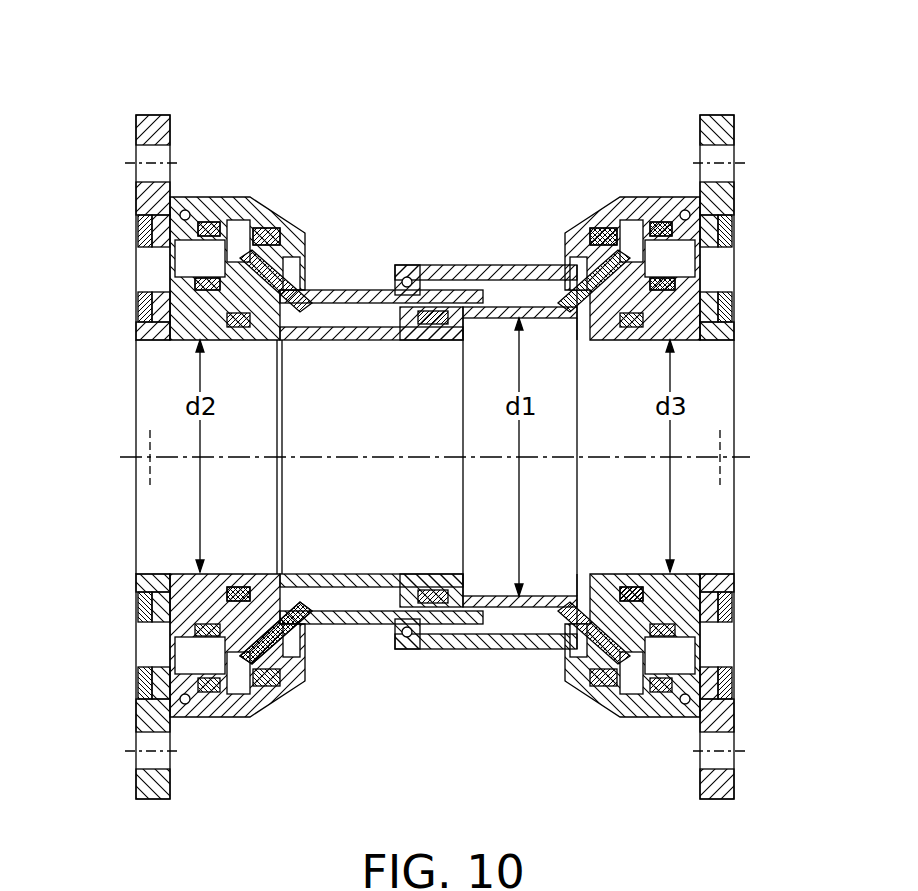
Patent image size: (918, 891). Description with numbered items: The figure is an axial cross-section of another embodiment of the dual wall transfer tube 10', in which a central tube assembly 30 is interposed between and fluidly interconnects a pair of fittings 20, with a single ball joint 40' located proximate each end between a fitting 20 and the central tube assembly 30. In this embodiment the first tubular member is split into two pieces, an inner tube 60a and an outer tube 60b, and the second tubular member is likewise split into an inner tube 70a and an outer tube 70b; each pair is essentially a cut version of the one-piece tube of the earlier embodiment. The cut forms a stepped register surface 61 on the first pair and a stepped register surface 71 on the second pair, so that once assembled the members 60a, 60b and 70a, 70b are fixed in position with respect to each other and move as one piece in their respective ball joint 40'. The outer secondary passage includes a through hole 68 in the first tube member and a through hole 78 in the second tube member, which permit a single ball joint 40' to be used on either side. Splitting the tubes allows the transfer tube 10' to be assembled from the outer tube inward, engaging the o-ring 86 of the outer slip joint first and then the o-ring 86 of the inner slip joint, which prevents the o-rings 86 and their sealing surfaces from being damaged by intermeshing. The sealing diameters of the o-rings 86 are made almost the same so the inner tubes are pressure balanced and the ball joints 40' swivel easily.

The dual wall transfer tube 10' is at (488, 247).
The fitting 20 is at (136, 791).
The single ball joint 40' is at (435, 426).
The central tube assembly 30 is at (438, 652).
The through hole 78 is at (560, 652).
The first tubular member (inner piece) 60a is at (200, 255).
The stepped register surface 61 is at (200, 267).
The first tubular member (outer piece) 60b is at (200, 291).
The second tubular member (inner piece) 70a is at (670, 255).
The stepped register surface 71 is at (670, 267).
The second tubular member (outer piece) 70b is at (670, 291).
The o-ring 86 is at (235, 588).
The through hole 68 is at (292, 643).